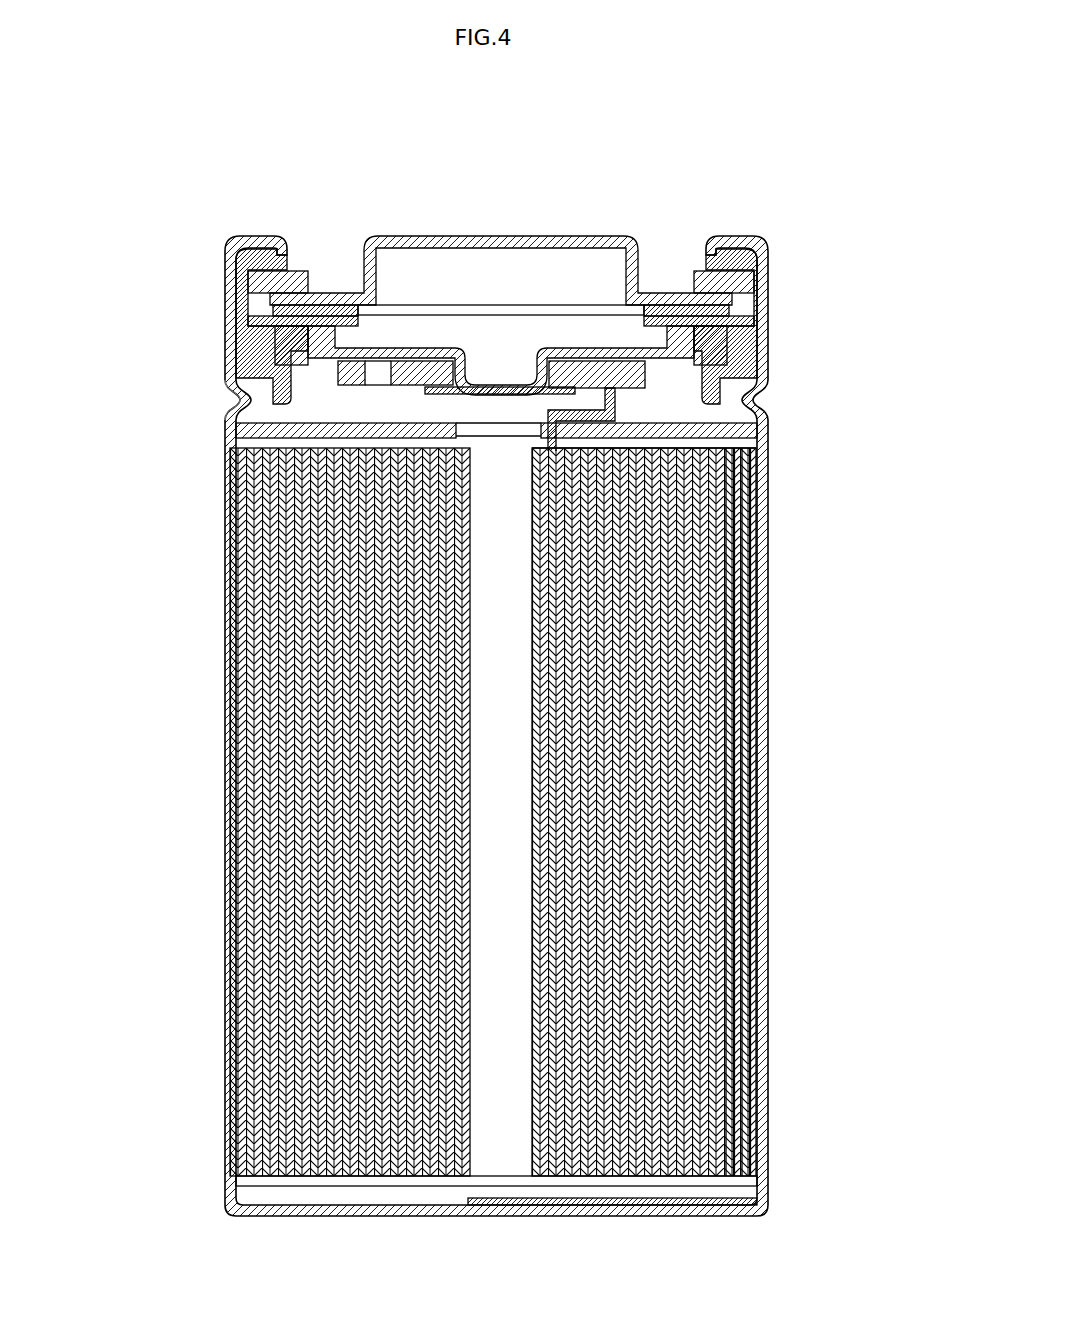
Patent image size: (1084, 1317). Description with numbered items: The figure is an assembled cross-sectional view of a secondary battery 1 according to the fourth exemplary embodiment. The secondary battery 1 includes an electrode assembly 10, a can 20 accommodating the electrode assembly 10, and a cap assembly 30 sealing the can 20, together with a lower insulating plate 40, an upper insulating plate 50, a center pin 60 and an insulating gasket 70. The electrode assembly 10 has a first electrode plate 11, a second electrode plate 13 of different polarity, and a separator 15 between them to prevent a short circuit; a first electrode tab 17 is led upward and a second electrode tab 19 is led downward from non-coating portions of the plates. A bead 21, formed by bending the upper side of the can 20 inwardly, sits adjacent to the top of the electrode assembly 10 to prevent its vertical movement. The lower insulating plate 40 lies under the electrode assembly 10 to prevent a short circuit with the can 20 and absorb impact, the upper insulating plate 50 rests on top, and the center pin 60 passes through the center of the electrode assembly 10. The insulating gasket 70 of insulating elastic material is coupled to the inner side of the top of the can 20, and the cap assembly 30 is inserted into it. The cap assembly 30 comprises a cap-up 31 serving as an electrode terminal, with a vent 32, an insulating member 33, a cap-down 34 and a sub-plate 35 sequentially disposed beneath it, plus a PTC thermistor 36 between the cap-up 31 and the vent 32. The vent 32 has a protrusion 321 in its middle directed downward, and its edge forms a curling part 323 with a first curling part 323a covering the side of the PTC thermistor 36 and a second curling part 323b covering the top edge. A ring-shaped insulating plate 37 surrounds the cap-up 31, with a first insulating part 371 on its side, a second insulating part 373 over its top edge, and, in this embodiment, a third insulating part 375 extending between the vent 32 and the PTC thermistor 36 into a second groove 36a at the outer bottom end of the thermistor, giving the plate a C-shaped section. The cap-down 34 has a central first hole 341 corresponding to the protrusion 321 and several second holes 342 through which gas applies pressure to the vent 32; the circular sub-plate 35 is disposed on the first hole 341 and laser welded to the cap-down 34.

The secondary battery 1 is at (172, 87).
The electrode assembly 10 is at (566, 803).
The first electrode plate 11 is at (722, 520).
The second electrode plate 13 is at (745, 455).
The separator 15 is at (735, 488).
The first electrode tab 17 is at (755, 425).
The second electrode tab 19 is at (757, 1178).
The can 20 is at (216, 608).
The bead 21 is at (230, 393).
The cap assembly 30 is at (648, 152).
The cap-up 31 is at (505, 228).
The vent 32 is at (345, 343).
The protrusion 321 is at (478, 380).
The curling part 323 is at (122, 207).
The first curling part 323a is at (240, 272).
The second curling part 323b is at (272, 240).
The insulating member 33 is at (313, 300).
The cap-down 34 is at (370, 370).
The first hole 341 is at (445, 440).
The second holes 342 is at (408, 447).
The sub-plate 35 is at (555, 353).
The PTC thermistor 36 is at (680, 262).
The second groove 36a is at (276, 243).
The insulating plate 37 is at (710, 262).
The first insulating part 371 is at (246, 306).
The second insulating part 373 is at (286, 310).
The third insulating part 375 is at (262, 338).
The lower insulating plate 40 is at (373, 1178).
The upper insulating plate 50 is at (240, 422).
The center pin 60 is at (473, 567).
The insulating gasket 70 is at (747, 278).